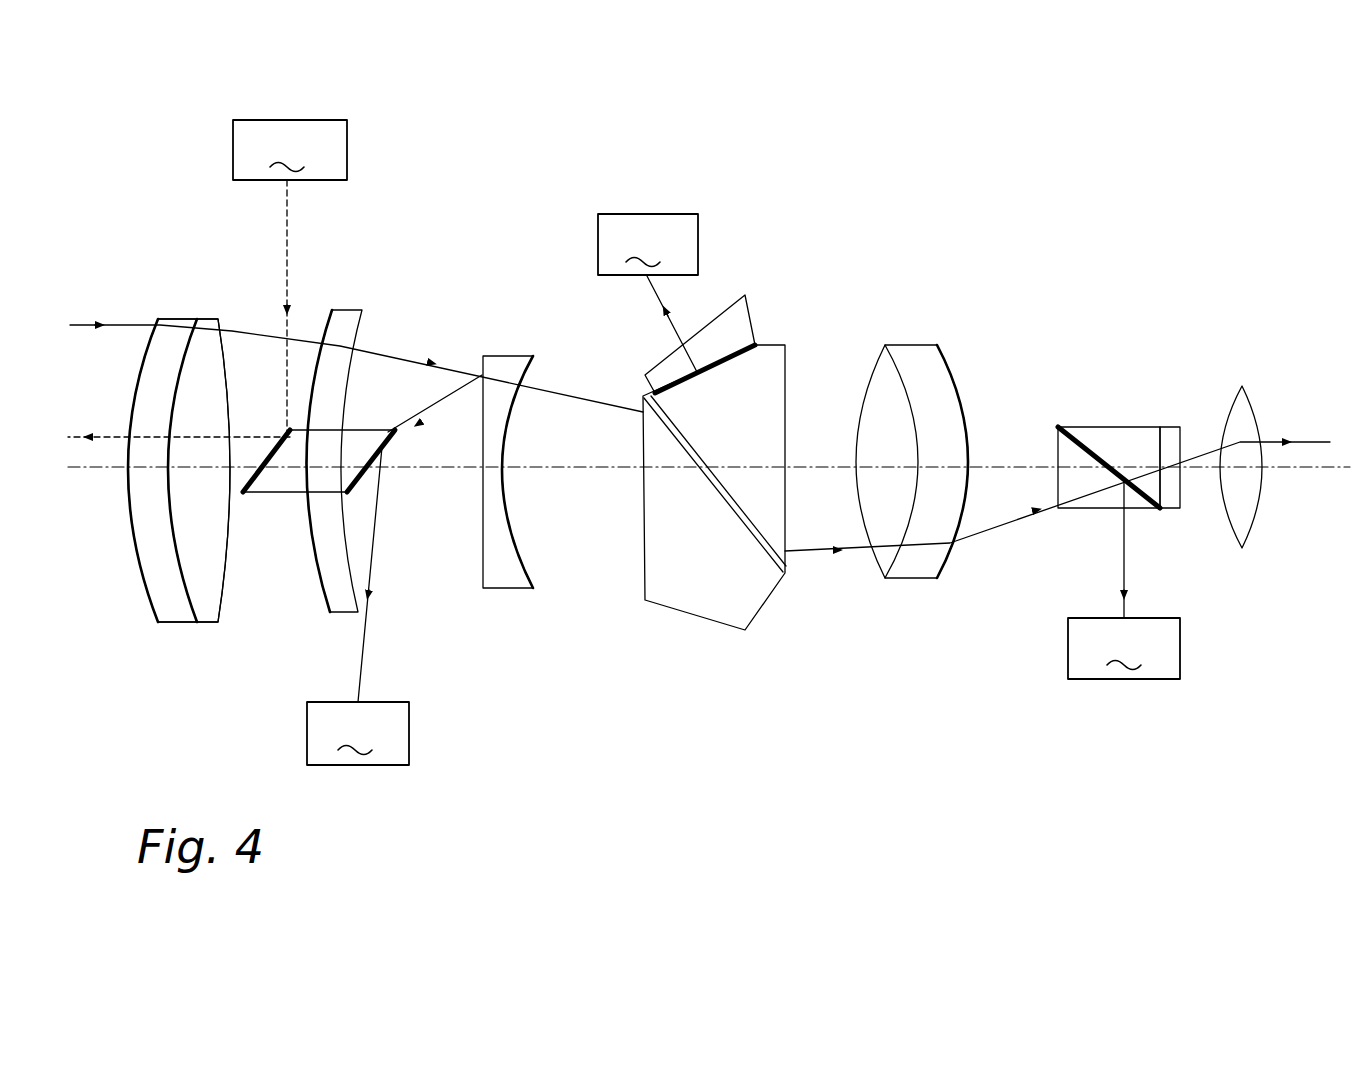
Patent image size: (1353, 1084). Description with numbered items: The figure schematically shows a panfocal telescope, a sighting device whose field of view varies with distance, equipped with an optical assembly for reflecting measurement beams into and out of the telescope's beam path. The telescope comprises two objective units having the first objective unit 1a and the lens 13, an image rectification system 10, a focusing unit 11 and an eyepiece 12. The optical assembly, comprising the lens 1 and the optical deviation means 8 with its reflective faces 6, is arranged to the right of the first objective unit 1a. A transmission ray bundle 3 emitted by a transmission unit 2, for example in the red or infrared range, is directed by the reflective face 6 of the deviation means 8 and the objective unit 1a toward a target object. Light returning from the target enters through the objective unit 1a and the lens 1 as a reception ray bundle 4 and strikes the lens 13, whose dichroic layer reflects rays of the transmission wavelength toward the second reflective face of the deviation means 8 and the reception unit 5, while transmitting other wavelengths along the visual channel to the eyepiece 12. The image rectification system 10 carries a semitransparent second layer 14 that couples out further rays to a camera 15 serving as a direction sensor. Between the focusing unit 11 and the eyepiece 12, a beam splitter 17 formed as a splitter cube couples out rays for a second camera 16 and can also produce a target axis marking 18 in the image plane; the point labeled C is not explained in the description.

The lens 1 is at (343, 320).
The first objective unit 1a is at (182, 292).
The transmission unit 2 is at (207, 278).
The transmission ray bundle 3 is at (115, 435).
The reception ray bundle 4 is at (120, 327).
The reception unit 5 is at (358, 606).
The reflective face 6 is at (277, 452).
The optical deviation means 8 is at (327, 438).
The image rectification system 10 is at (713, 607).
The focusing unit 11 is at (920, 337).
The eyepiece 12 is at (1255, 548).
The lens 13 is at (500, 575).
The second layer 14 is at (732, 353).
The camera 15 is at (648, 293).
The second camera 16 is at (1124, 579).
The beam splitter 17 is at (1103, 437).
The target axis marking 18 is at (1175, 437).
The crossover point C is at (1013, 467).